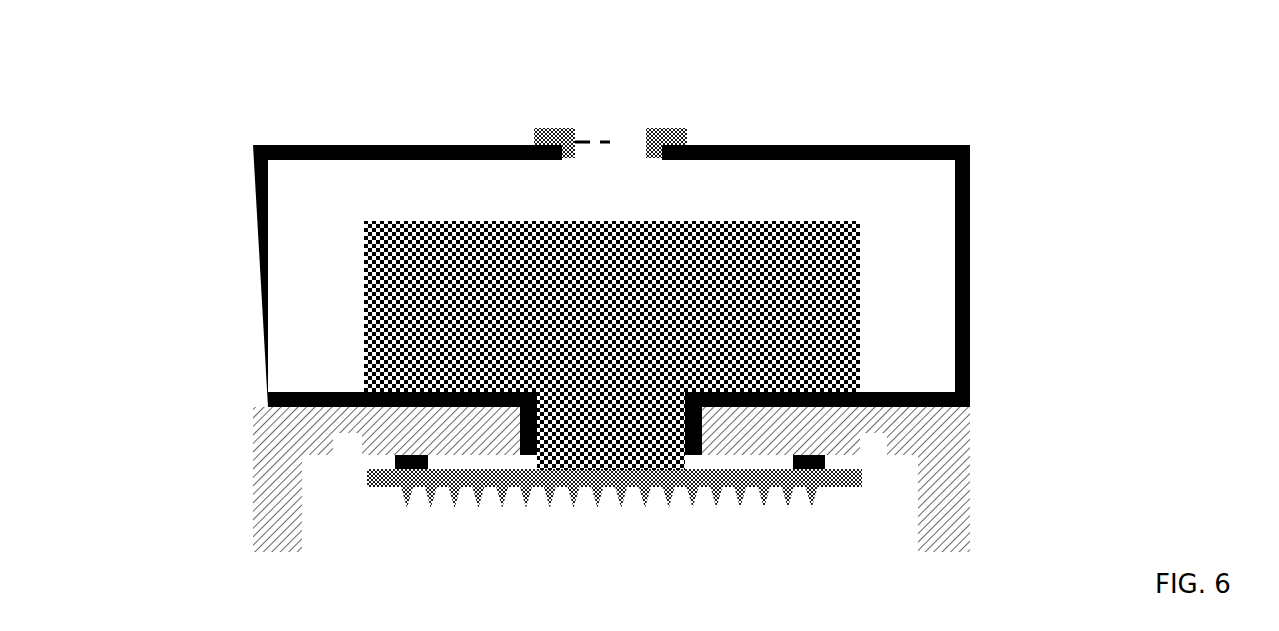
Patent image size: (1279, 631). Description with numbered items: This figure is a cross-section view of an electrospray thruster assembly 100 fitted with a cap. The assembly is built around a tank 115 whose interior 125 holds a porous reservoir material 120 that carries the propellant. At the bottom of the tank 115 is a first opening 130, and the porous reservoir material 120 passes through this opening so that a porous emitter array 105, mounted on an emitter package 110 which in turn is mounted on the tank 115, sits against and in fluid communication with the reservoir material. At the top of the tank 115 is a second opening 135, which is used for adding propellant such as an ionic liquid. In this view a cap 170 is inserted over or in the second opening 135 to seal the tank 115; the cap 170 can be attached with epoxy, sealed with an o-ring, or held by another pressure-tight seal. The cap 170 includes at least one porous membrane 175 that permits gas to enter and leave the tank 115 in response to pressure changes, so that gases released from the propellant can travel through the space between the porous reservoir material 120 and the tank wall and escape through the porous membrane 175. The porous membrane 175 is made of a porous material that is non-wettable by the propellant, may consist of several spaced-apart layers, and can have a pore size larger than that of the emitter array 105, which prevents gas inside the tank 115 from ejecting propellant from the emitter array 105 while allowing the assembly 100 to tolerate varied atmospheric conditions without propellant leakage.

The electrospray thruster assembly 100 is at (526, 337).
The porous emitter array 105 is at (370, 477).
The emitter package 110 is at (260, 423).
The tank 115 is at (254, 192).
The porous reservoir material 120 is at (859, 307).
The interior 125 is at (338, 206).
The first opening 130 is at (700, 465).
The second opening 135 is at (636, 146).
The cap 170 is at (545, 124).
The porous membrane 175 is at (611, 143).